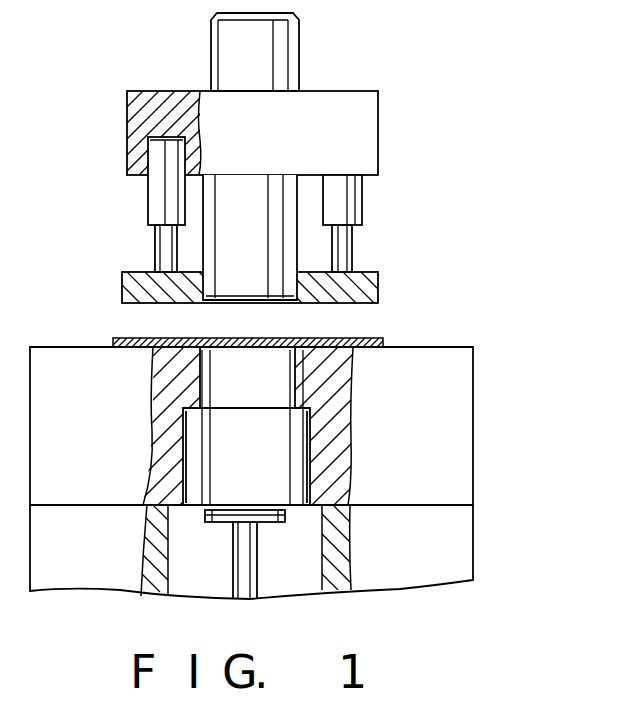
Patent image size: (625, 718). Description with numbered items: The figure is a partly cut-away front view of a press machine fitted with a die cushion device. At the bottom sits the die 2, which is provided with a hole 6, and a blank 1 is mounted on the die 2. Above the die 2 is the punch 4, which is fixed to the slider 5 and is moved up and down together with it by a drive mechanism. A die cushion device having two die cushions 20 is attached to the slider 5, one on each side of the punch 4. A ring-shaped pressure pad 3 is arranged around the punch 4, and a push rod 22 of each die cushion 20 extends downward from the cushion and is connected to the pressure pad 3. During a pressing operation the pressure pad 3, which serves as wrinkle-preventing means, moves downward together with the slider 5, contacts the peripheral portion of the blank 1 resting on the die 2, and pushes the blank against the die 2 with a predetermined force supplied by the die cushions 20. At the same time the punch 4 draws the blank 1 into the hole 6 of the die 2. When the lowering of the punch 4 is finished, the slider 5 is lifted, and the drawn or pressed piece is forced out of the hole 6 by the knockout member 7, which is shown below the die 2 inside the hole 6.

The blank 1 is at (381, 336).
The die 2 is at (462, 424).
The pressure pad 3 is at (365, 288).
The punch 4 is at (299, 44).
The slider 5 is at (365, 123).
The hole 6 is at (228, 402).
The knockout member 7 is at (257, 567).
The die cushion 20 is at (147, 198).
The guide pin 22 is at (155, 250).